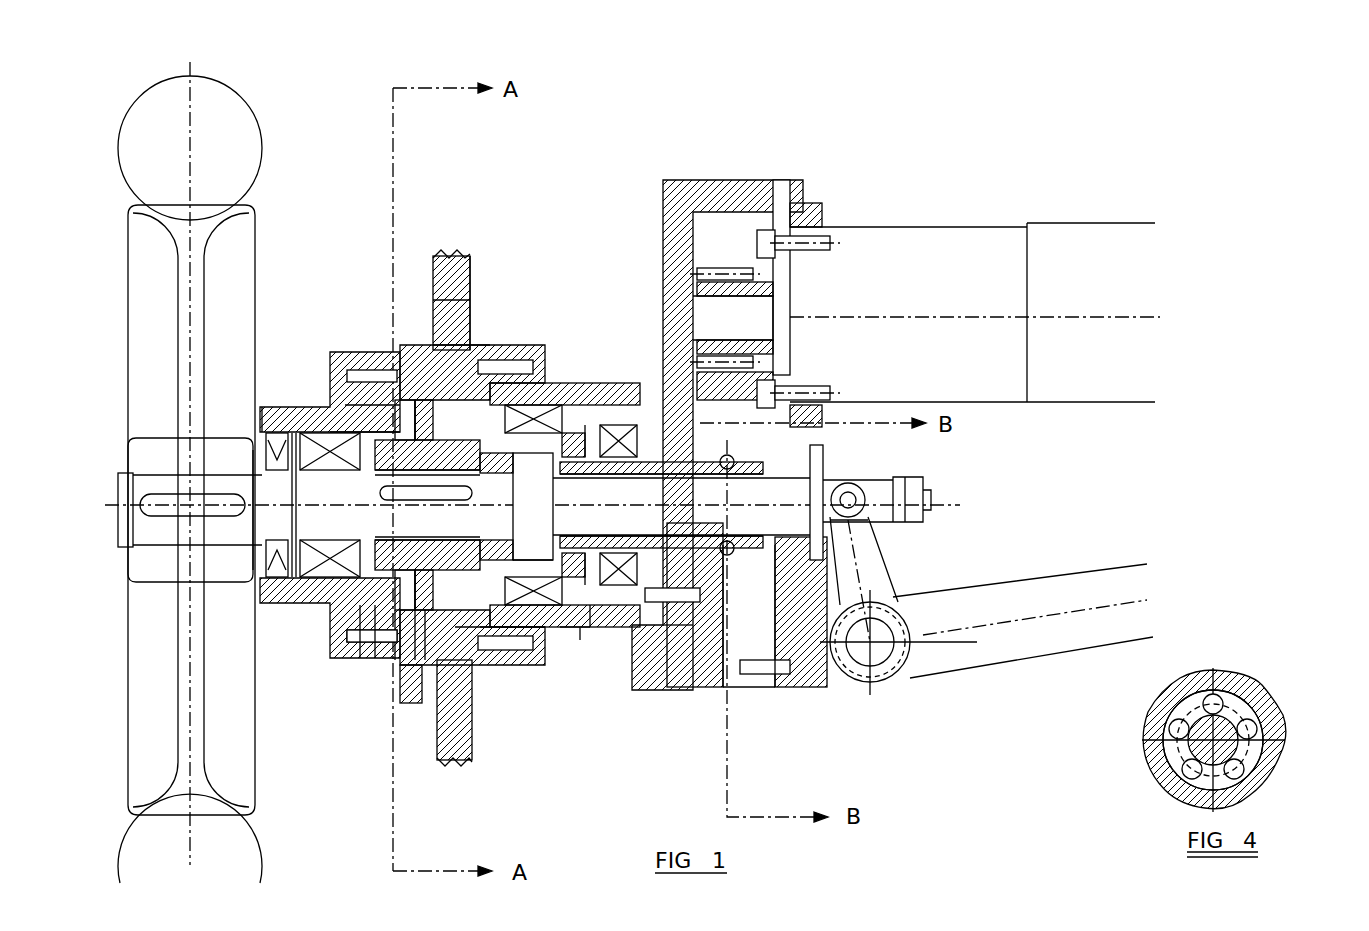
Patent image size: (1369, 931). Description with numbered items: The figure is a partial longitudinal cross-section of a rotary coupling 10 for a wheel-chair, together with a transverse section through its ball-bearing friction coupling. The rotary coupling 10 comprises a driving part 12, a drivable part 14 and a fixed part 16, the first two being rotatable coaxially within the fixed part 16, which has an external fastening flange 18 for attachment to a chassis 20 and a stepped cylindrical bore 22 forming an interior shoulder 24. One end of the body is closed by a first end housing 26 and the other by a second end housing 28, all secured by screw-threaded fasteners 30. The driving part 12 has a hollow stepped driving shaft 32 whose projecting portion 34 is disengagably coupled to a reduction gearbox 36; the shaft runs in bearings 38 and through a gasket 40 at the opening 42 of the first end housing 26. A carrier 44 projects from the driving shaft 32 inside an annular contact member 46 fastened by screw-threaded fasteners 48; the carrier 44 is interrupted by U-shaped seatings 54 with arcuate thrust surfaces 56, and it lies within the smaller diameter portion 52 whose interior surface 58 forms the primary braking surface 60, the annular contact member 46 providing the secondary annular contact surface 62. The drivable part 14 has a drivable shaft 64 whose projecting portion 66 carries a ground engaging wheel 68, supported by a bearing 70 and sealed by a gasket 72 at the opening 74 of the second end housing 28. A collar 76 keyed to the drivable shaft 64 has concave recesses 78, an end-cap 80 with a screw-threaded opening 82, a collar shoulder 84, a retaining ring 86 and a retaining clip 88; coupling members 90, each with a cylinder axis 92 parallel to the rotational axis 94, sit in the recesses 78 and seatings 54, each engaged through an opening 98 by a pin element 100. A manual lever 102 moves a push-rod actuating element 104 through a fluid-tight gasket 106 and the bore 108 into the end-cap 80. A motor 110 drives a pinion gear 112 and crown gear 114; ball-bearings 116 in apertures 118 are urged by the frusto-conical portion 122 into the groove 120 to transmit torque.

In FIG. 1, the rotary coupling 10 is at (308, 262).
In FIG. 1, the driving part 12 is at (588, 372).
In FIG. 1, the drivable part 14 is at (325, 470).
In FIG. 1, the fixed part 16 is at (493, 350).
In FIG. 1, the external fastening flange 18 is at (428, 345).
In FIG. 1, the chassis 20 is at (453, 250).
In FIG. 1, the stepped cylindrical bore 22 is at (395, 340).
In FIG. 1, the interior shoulder 24 is at (462, 760).
In FIG. 1, the first end housing 26 is at (607, 615).
In FIG. 1, the second end housing 28 is at (305, 605).
In FIG. 1, the screw-threaded fasteners 30 is at (345, 655).
In FIG. 1, the driving shaft 32 is at (528, 650).
In FIG. 1, the projecting portion 34 is at (672, 650).
In FIG. 4, the projecting portion 34 is at (1148, 757).
In FIG. 1, the reduction gearbox 36 is at (740, 687).
In FIG. 1, the bearings 38 is at (622, 372).
In FIG. 1, the gasket 40 is at (657, 345).
In FIG. 1, the opening 42 is at (645, 400).
In FIG. 1, the carrier 44 is at (405, 395).
In FIG. 1, the annular contact member 46 is at (540, 655).
In FIG. 1, the screw-threaded fasteners 48 is at (490, 630).
In FIG. 1, the smaller diameter portion 52 is at (405, 635).
In FIG. 1, the U-shaped seatings 54 is at (427, 505).
In FIG. 1, the arcuate thrust surfaces 56 is at (425, 665).
In FIG. 1, the interior surface 58 is at (525, 360).
In FIG. 1, the primary braking surface 60 is at (350, 360).
In FIG. 1, the secondary annular contact surface 62 is at (661, 505).
In FIG. 1, the drivable shaft 64 is at (340, 630).
In FIG. 1, the projecting portion 66 is at (172, 538).
In FIG. 1, the ground engaging wheel 68 is at (152, 790).
In FIG. 1, the bearing 70 is at (370, 650).
In FIG. 1, the gasket 72 is at (256, 625).
In FIG. 1, the opening 74 is at (290, 470).
In FIG. 1, the collar 76 is at (586, 633).
In FIG. 1, the concave recesses 78 is at (412, 703).
In FIG. 1, the end-cap 80 is at (568, 630).
In FIG. 1, the screw-threaded opening 82 is at (593, 627).
In FIG. 1, the collar shoulder 84 is at (462, 340).
In FIG. 1, the retaining ring 86 is at (335, 390).
In FIG. 1, the retaining clip 88 is at (345, 430).
In FIG. 1, the coupling members 90 is at (392, 655).
In FIG. 1, the cylinder axis 92 is at (458, 660).
In FIG. 1, the rotational axis 94 is at (125, 512).
In FIG. 1, the opening 98 is at (378, 365).
In FIG. 1, the pin element 100 is at (462, 340).
In FIG. 1, the manual lever 102 is at (1020, 640).
In FIG. 1, the push-rod actuating element 104 is at (635, 512).
In FIG. 1, the fluid-tight gasket 106 is at (808, 462).
In FIG. 1, the bore 108 is at (717, 687).
In FIG. 1, the battery-operated motor 110 is at (1088, 250).
In FIG. 1, the pinion gear 112 is at (710, 280).
In FIG. 1, the crown gear 114 is at (780, 687).
In FIG. 4, the crown gear 114 is at (1158, 715).
In FIG. 1, the ball-bearings 116 is at (830, 682).
In FIG. 4, the ball-bearings 116 is at (1265, 712).
In FIG. 1, the apertures 118 is at (875, 582).
In FIG. 4, the apertures 118 is at (1265, 770).
In FIG. 1, the groove 120 is at (815, 422).
In FIG. 1, the frusto-conical portion 122 is at (705, 510).